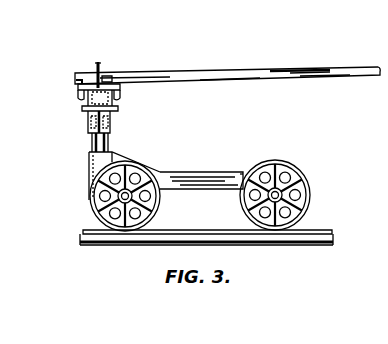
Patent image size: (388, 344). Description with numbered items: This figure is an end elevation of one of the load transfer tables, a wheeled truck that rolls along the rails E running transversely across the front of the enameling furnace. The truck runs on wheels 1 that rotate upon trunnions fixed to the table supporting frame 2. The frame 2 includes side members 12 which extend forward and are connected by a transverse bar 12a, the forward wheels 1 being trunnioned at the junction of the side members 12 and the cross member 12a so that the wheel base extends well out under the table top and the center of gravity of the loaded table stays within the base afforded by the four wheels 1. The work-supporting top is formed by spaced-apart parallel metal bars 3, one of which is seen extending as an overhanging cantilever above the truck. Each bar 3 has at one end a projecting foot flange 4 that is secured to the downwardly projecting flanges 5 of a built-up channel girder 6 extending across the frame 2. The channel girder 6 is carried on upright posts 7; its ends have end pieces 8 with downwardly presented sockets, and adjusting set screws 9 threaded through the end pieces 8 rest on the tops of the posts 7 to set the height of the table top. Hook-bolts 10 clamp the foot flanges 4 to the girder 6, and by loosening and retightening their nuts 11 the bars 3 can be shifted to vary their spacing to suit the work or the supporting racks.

The wheels 1 is at (90, 198).
The table supporting frame 2 is at (89, 166).
The metal bars 3 is at (250, 72).
The foot flange 4 is at (112, 78).
The downwardly projecting flanges 5 is at (79, 92).
The channel girder 6 is at (84, 106).
The upright posts 7 is at (108, 145).
The end pieces 8 is at (112, 120).
The adjusting set screws 9 is at (97, 70).
The hook-bolts 10 is at (78, 84).
The nuts 11 is at (79, 80).
The side members 12 is at (200, 178).
The transverse bar 12a is at (286, 168).
The rails E is at (90, 240).